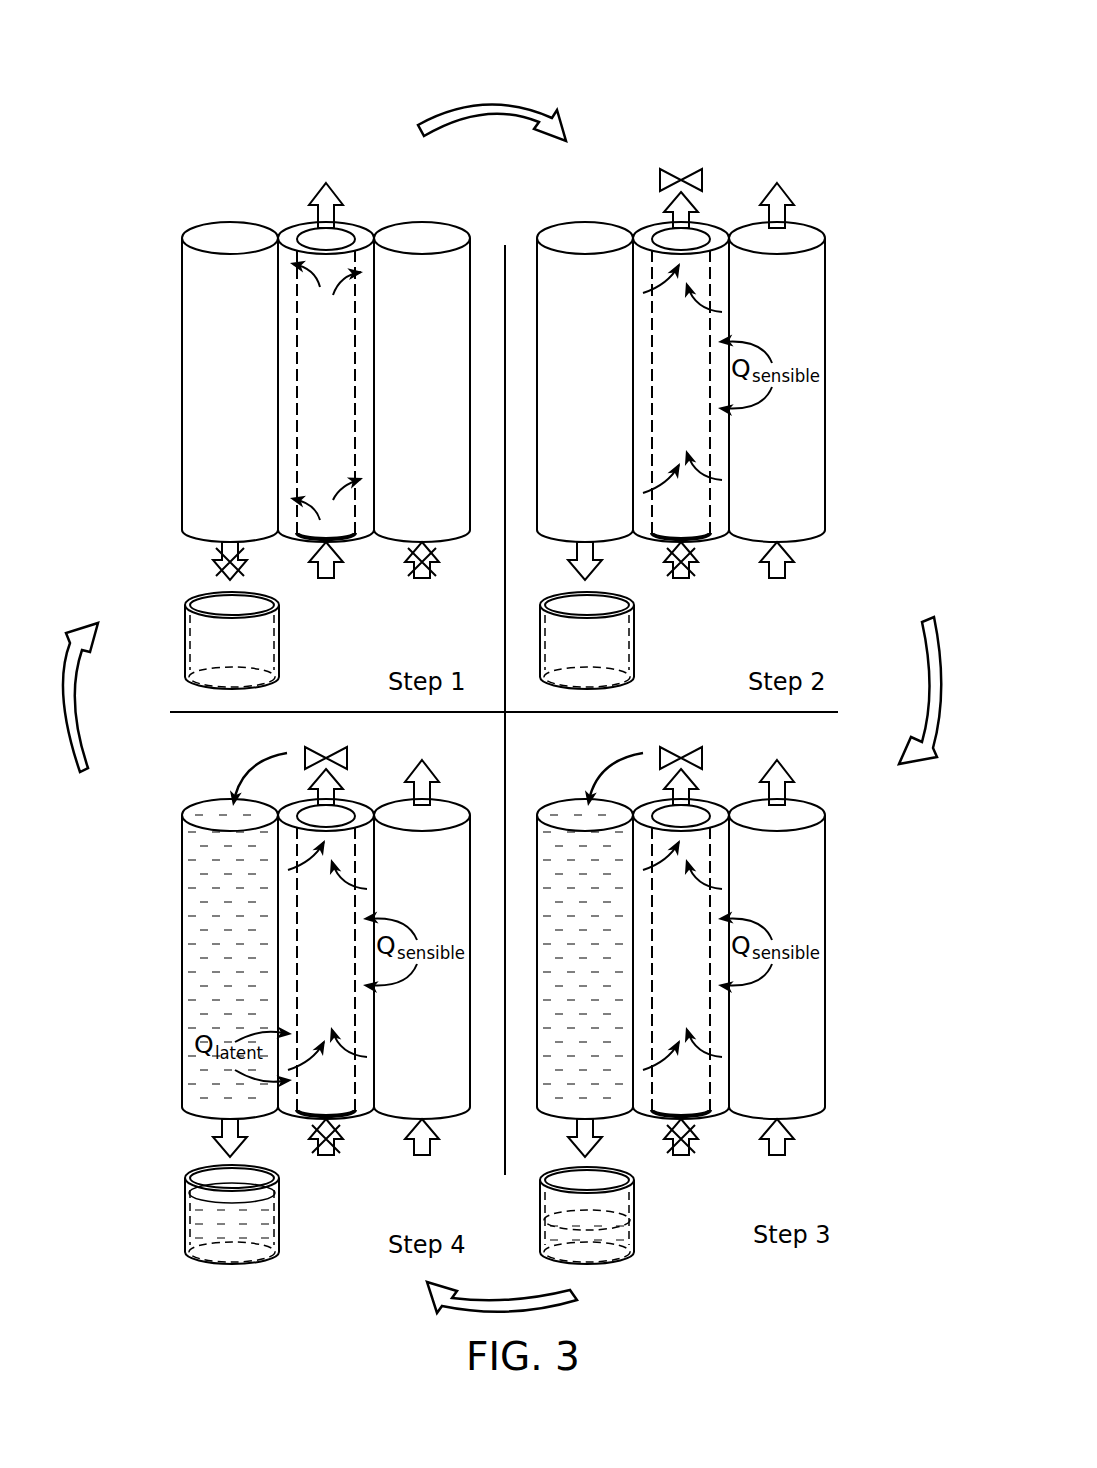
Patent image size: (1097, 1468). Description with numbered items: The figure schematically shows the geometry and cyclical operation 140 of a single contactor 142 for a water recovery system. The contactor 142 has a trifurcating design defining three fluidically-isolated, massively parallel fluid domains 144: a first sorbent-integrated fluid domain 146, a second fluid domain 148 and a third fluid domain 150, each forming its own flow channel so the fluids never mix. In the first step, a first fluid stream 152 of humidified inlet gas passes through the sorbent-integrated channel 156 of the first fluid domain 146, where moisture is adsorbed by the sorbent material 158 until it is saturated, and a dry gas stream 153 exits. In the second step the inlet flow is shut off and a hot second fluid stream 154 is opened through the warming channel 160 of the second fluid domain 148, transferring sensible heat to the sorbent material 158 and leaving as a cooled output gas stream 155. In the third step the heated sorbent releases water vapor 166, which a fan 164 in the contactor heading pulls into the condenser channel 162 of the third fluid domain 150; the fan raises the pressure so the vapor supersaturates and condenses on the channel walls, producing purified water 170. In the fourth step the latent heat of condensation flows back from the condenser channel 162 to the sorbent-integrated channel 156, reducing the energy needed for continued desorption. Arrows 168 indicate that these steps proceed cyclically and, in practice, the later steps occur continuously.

The cyclical operation 140 is at (644, 70).
The contactor 142 is at (163, 264).
The parallel fluid domains 144 is at (162, 497).
The first fluidically-isolated, sorbent-integrated, fluid domain 146 is at (505, 670).
The second fluidically-isolated fluid domain 148 is at (642, 641).
The third fluidically-isolated fluid domain 150 is at (182, 330).
The first fluid stream 152 is at (340, 578).
The dry gas stream 153 is at (332, 228).
The second fluid stream 154 is at (792, 570).
The cooled output gas stream 155 is at (778, 182).
The sorbent-integrated channel 156 is at (305, 235).
The sorbent material 158 is at (285, 238).
The warming channel 160 is at (812, 240).
The condenser channel 162 is at (182, 1005).
The fan 164 is at (304, 755).
The water vapor 166 is at (660, 183).
The arrows 168 is at (566, 127).
The purified water 170 is at (600, 572).